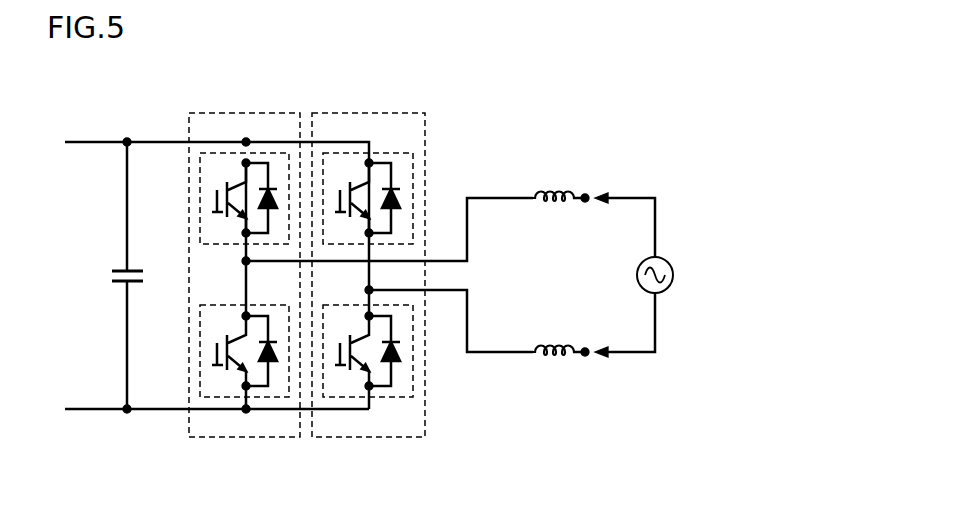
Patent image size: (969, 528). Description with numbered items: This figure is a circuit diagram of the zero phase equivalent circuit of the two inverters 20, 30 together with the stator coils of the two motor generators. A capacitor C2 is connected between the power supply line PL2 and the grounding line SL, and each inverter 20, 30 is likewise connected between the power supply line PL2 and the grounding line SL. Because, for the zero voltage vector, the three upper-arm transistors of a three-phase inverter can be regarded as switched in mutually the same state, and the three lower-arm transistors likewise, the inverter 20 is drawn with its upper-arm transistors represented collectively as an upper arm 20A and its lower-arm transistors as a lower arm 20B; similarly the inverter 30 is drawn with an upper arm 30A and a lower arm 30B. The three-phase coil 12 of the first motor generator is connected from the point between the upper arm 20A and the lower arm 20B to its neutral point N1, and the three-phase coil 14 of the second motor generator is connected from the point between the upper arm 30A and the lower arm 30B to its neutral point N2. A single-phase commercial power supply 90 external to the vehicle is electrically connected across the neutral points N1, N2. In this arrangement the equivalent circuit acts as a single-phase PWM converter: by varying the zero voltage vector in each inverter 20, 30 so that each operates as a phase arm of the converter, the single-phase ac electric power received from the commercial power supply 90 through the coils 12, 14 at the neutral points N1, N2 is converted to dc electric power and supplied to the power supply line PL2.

The power supply line PL2 is at (93, 135).
The grounding line SL is at (93, 413).
The capacitor C2 is at (140, 267).
The inverter 20 is at (213, 113).
The upper arm 20A is at (269, 153).
The lower arm 20B is at (223, 397).
The inverter 30 is at (340, 113).
The upper arm 30A is at (393, 153).
The lower arm 30B is at (387, 397).
The 3-phase coil 12 is at (552, 175).
The 3-phase coil 14 is at (552, 328).
The neutral point N1 is at (586, 188).
The neutral point N2 is at (586, 341).
The commercial power supply 90 is at (667, 290).